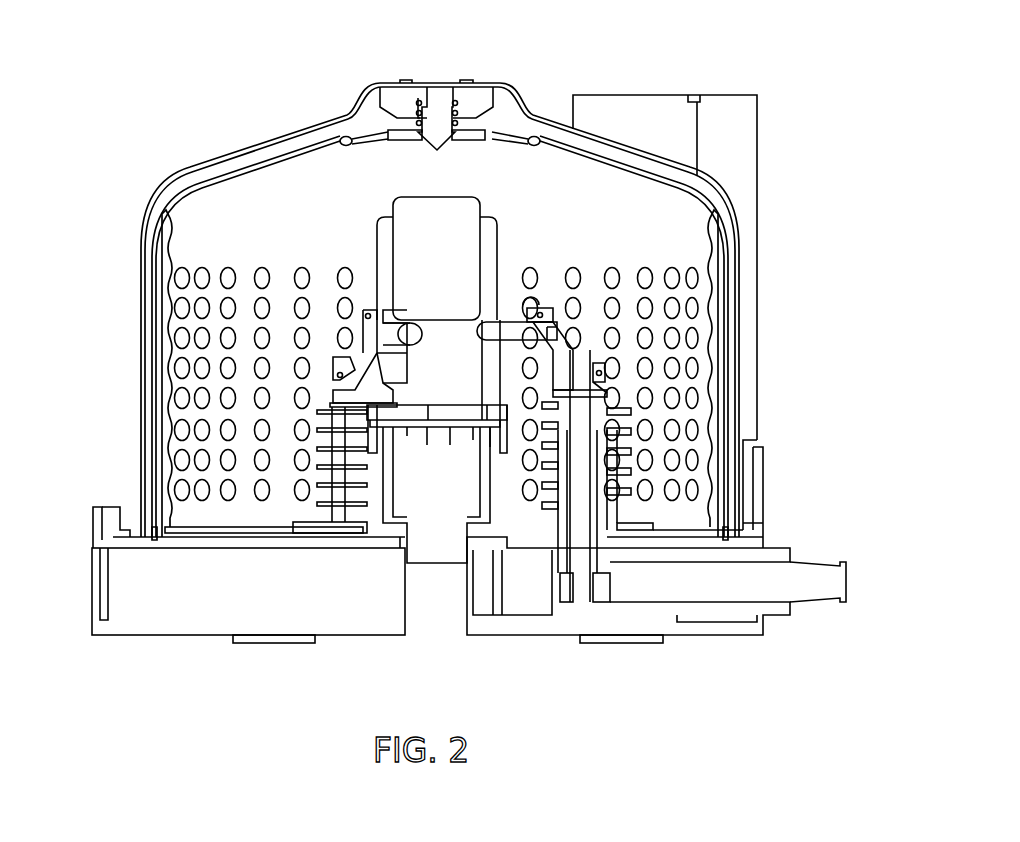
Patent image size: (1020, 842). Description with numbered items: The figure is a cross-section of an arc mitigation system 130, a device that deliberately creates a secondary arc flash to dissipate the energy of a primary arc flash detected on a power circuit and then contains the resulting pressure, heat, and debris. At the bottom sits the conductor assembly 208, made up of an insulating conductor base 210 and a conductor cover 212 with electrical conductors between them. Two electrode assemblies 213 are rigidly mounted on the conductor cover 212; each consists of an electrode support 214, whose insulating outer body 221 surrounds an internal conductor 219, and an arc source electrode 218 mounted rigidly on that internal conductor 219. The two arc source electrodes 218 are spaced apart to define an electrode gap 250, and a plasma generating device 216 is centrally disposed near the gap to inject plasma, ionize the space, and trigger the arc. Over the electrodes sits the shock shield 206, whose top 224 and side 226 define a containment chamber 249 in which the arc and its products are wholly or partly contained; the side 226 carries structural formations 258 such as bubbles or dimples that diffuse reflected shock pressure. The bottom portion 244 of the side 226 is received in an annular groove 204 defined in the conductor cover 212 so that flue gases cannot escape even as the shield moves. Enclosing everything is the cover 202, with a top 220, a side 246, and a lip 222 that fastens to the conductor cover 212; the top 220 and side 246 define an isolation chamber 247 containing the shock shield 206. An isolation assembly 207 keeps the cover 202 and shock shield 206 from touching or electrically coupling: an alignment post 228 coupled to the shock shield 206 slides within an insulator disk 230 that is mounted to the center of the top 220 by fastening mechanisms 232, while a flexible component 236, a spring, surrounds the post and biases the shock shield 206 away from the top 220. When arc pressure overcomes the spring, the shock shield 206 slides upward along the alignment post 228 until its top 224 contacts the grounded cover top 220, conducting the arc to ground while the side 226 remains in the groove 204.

The arc mitigation system 130 is at (204, 72).
The cover 202 is at (258, 147).
The annular groove 204 is at (140, 522).
The shock shield 206 is at (215, 168).
The isolation assembly 207 is at (500, 114).
The conductor assembly 208 is at (826, 626).
The conductor base 210 is at (370, 606).
The conductor cover 212 is at (100, 545).
The electrode assembly 213 is at (320, 392).
The electrode support 214 is at (592, 360).
The plasma generating device 216 is at (412, 428).
The arc source electrode 218 is at (368, 318).
The internal conductor 219 is at (571, 586).
The top 220 is at (546, 115).
The outer body 221 is at (318, 522).
The lip 222 is at (745, 528).
The top 224 is at (600, 128).
The side 226 is at (723, 352).
The alignment post 228 is at (445, 146).
The insulator disk 230 is at (388, 93).
The fastening mechanisms 232 is at (401, 80).
The flexible component 236 is at (382, 94).
The bottom portion 244 is at (162, 527).
The side 246 is at (736, 368).
The isolation chamber 247 is at (210, 170).
The containment chamber 249 is at (245, 226).
The electrode gap 250 is at (453, 398).
The structural formations 258 is at (715, 335).